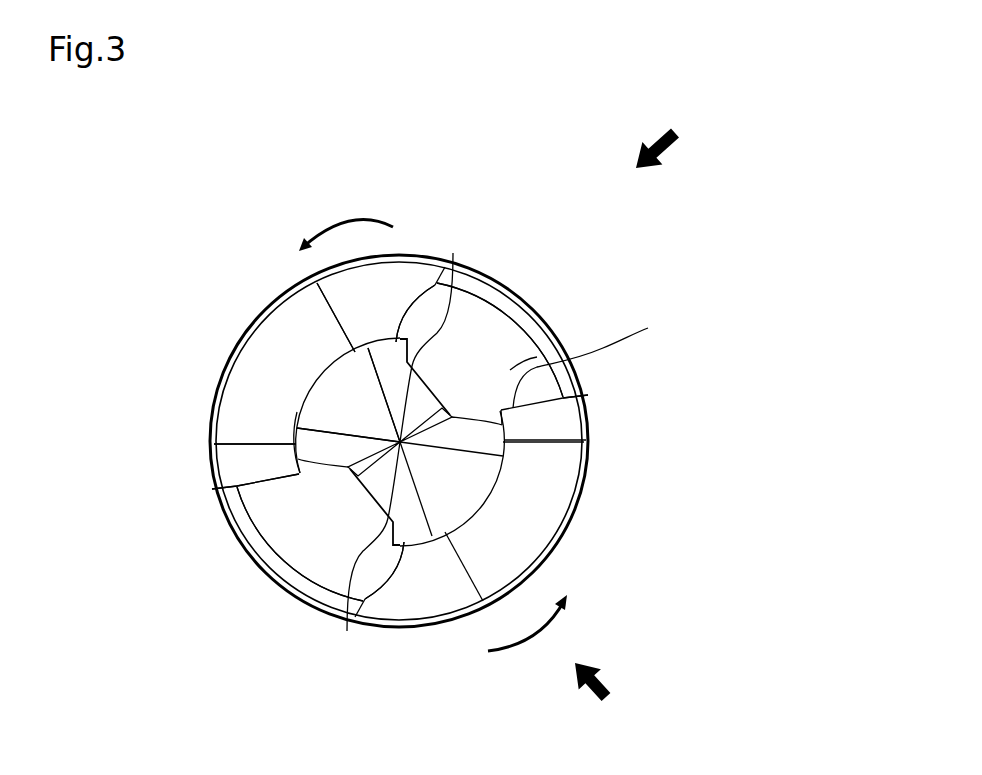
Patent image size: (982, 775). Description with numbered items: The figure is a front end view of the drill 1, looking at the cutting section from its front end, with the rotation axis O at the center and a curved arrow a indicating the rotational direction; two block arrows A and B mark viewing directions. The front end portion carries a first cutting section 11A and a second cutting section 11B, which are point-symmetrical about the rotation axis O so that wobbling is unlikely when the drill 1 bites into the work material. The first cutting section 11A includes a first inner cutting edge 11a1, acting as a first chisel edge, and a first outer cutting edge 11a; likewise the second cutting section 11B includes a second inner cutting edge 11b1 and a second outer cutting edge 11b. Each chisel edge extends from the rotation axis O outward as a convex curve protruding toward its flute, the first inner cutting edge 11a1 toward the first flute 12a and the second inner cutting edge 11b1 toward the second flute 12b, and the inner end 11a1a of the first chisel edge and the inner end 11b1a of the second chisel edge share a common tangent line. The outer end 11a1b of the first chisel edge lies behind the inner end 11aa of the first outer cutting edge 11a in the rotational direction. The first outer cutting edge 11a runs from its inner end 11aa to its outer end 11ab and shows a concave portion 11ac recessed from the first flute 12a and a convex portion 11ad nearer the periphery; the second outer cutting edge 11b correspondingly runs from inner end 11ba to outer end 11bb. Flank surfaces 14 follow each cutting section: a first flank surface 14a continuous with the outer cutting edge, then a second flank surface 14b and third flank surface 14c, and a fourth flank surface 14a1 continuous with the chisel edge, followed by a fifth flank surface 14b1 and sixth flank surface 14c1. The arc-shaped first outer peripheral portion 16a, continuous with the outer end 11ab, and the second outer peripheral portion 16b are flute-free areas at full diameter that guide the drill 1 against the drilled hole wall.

The drill 1 is at (255, 180).
The rotation axis O is at (383, 500).
The first cutting section 11A is at (652, 230).
The second cutting section 11B is at (318, 652).
The first outer cutting edge 11a is at (693, 285).
The second outer cutting edge 11b is at (240, 583).
The first inner cutting edge 11a1 is at (550, 249).
The second inner cutting edge 11b1 is at (347, 474).
The inner end 11a1a is at (453, 262).
The outer end 11a1b is at (501, 415).
The inner end 11b1a is at (299, 469).
The inner end 11aa is at (548, 353).
The outer end 11ab is at (588, 406).
The concave portion 11ac is at (568, 397).
The convex portion 11ad is at (502, 408).
The inner end 11ba is at (232, 487).
The outer end 11bb is at (298, 476).
The first flute 12a is at (437, 307).
The second flute 12b is at (355, 585).
The flank surface 14 is at (82, 268).
The first flank surface 14a is at (247, 450).
The second flank surface 14b is at (257, 400).
The third flank surface 14c is at (353, 313).
The fourth flank surface 14a1 is at (327, 440).
The fifth flank surface 14b1 is at (335, 409).
The sixth flank surface 14c1 is at (390, 371).
The first outer peripheral portion 16a is at (590, 436).
The second outer peripheral portion 16b is at (292, 282).
The rotation direction a is at (433, 438).
The viewing direction A is at (667, 143).
The viewing direction B is at (607, 682).